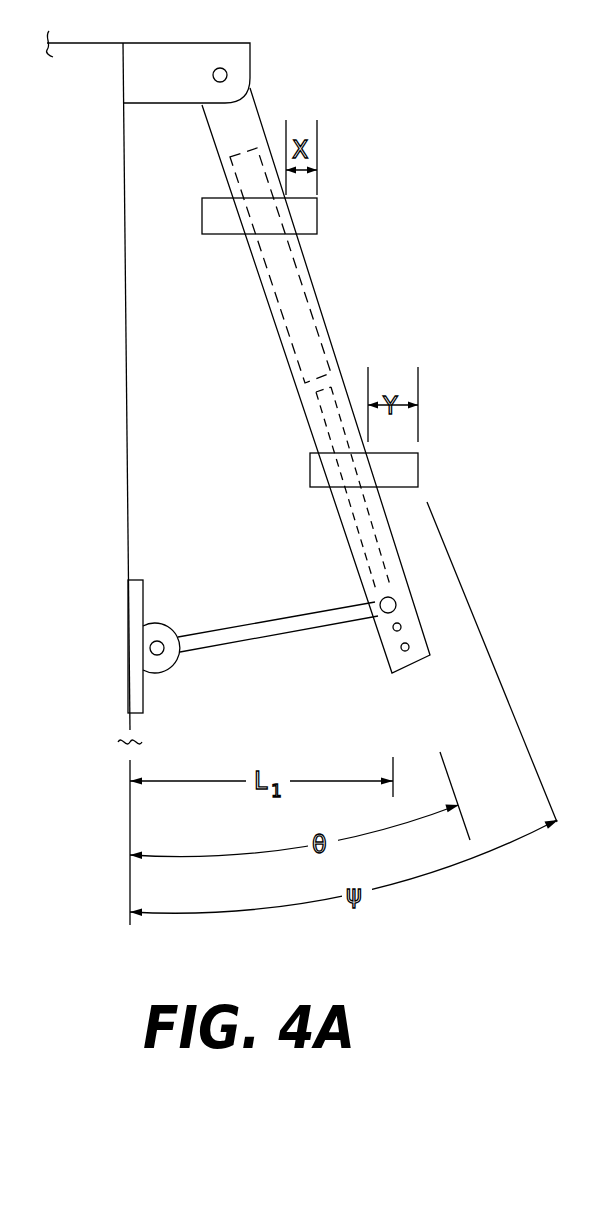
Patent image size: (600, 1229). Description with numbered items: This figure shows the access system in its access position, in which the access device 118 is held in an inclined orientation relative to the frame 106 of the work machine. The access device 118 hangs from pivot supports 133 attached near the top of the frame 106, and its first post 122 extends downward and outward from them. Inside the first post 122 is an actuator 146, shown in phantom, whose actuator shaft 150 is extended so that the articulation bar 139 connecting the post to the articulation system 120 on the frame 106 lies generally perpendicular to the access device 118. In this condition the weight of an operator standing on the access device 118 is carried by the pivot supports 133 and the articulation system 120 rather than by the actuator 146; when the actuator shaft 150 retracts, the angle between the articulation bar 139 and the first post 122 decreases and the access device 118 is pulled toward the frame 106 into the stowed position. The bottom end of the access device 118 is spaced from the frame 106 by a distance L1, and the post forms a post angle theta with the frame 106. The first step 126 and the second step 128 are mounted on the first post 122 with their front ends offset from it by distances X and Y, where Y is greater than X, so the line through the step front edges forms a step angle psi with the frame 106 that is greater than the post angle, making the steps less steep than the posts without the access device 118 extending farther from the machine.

The frame 106 is at (123, 305).
The access device 118 is at (243, 352).
The articulation system 120 is at (198, 662).
The first post 122 is at (245, 125).
The first step 126 is at (308, 213).
The second step 128 is at (403, 468).
The pivot supports 133 is at (152, 66).
The articulation bar 139 is at (295, 625).
The actuator 146 is at (327, 312).
The actuator shaft 150 is at (347, 380).